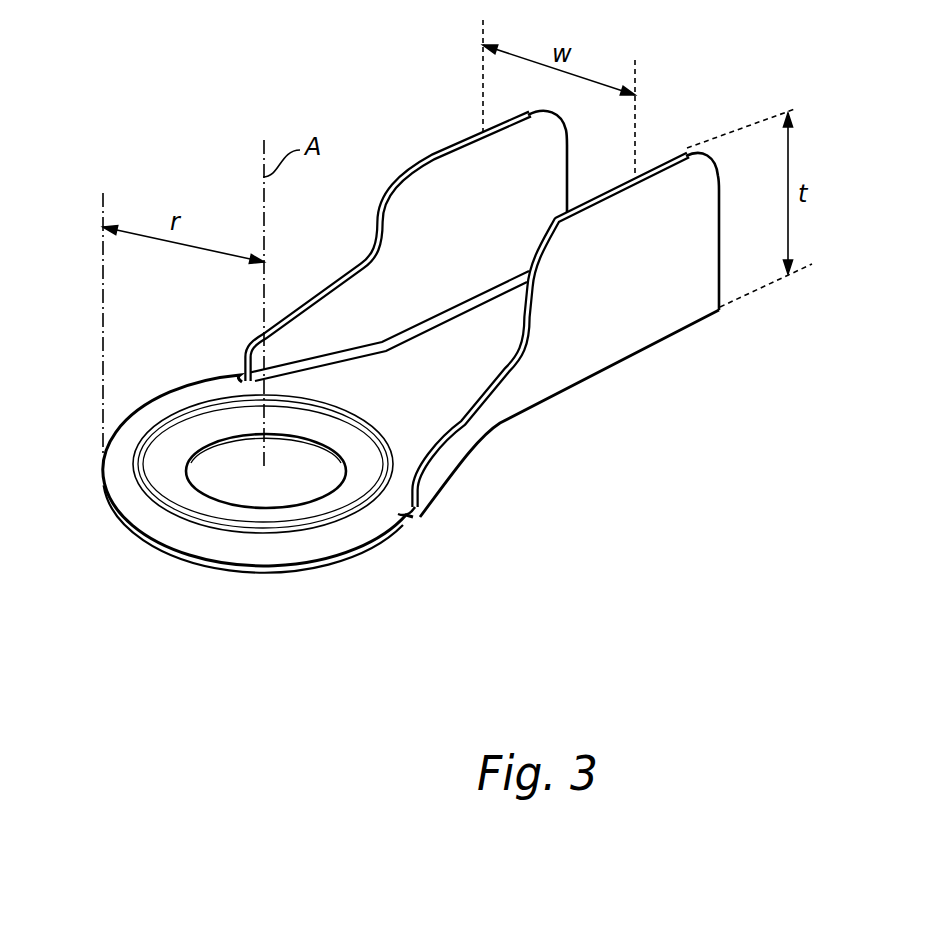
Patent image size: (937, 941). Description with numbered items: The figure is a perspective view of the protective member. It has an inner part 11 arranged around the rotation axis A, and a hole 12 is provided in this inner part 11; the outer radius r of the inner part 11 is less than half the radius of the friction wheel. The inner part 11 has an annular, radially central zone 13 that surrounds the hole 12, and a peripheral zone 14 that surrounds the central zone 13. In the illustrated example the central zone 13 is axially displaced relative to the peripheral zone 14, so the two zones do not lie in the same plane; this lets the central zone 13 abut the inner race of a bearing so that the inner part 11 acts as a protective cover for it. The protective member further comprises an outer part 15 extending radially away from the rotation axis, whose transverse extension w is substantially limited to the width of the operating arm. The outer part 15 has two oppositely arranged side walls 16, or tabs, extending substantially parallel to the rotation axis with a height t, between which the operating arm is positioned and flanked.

The inner part 11 is at (408, 359).
The hole 12 is at (307, 475).
The central zone 13 is at (285, 515).
The peripheral zone 14 is at (135, 503).
The outer part 15 is at (633, 363).
The side walls 16 is at (433, 157).